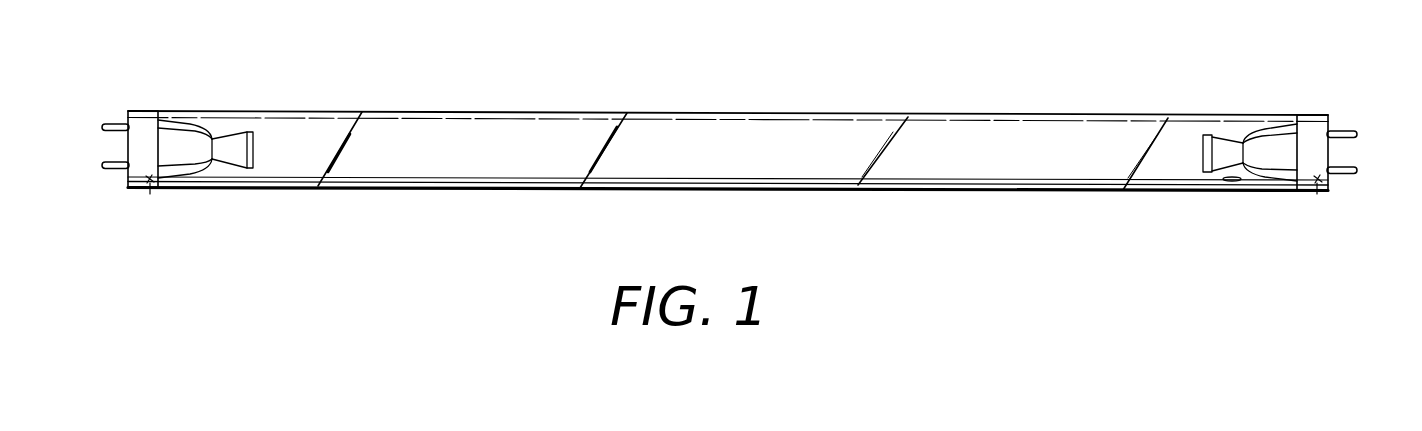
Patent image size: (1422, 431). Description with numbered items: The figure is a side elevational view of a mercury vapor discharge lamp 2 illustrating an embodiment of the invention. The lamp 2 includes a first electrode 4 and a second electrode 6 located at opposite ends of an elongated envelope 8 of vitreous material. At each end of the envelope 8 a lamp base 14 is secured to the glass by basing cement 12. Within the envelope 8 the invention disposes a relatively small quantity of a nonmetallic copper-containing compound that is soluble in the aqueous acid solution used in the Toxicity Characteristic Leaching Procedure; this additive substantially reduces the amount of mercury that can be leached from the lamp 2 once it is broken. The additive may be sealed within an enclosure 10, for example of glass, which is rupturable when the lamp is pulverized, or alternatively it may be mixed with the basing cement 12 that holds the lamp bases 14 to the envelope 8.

The mercury vapor discharge lamp 2 is at (743, 121).
The first electrode 4 is at (225, 126).
The second electrode 6 is at (1247, 115).
The elongated envelope 8 is at (873, 114).
The enclosure 10 is at (1237, 184).
The basing cement 12 is at (148, 189).
The lamp bases 14 is at (139, 146).